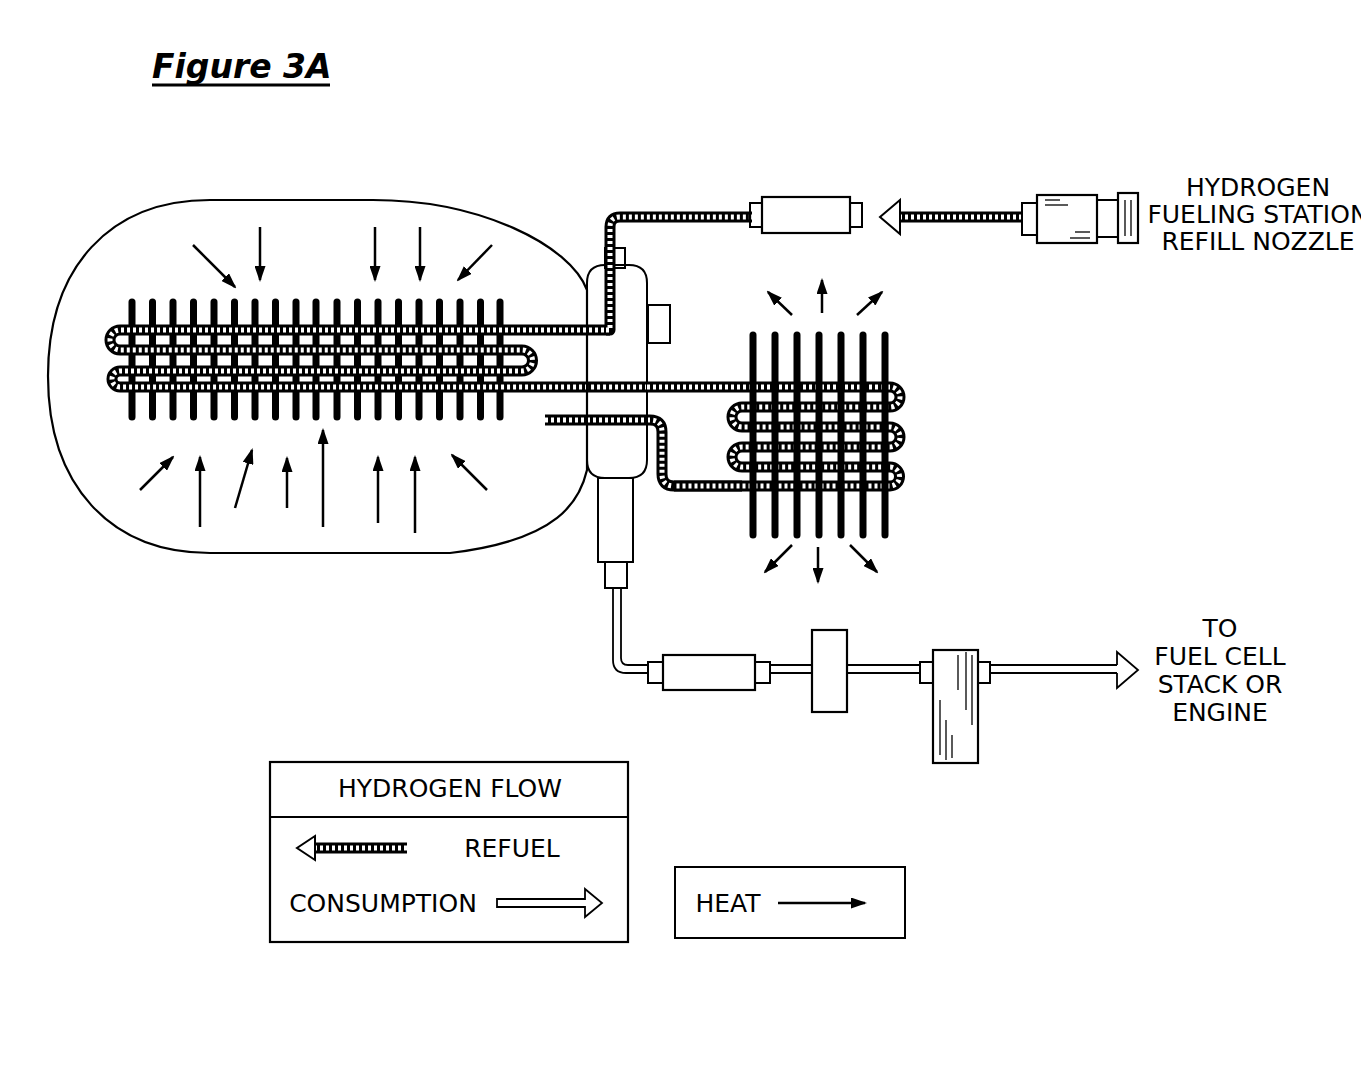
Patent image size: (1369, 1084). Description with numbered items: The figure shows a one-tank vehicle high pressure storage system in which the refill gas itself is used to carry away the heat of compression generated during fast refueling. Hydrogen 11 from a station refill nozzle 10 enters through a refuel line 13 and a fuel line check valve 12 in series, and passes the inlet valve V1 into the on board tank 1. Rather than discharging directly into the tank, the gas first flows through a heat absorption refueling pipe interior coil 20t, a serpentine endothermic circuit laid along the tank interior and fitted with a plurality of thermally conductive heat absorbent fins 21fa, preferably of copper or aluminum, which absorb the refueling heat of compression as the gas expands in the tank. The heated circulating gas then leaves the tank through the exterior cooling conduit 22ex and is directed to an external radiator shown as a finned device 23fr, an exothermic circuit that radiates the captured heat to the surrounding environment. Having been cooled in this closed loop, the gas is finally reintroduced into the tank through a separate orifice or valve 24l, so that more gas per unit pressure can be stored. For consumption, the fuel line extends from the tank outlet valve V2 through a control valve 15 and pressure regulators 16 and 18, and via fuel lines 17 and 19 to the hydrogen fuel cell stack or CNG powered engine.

The on board tank 1 is at (163, 545).
The station refill nozzle 10 is at (1068, 245).
The hydrogen 11 is at (950, 228).
The fuel line check valve 12 is at (805, 197).
The refuel line 13 is at (675, 212).
The control valve 15 is at (710, 690).
The pressure regulator 16 is at (828, 712).
The fuel line 17 is at (889, 665).
The pressure regulator 18 is at (956, 765).
The fuel line 19 is at (1063, 665).
The heat absorption refueling pipe interior coil 20t is at (540, 323).
The heat absorbent fins 21fa is at (313, 300).
The exterior cooling conduit 22ex is at (710, 380).
The finned radiator 23fr is at (890, 370).
The separate orifice or valve 24l is at (560, 425).
The inlet valve V1 is at (657, 305).
The tank outlet valve V2 is at (637, 532).